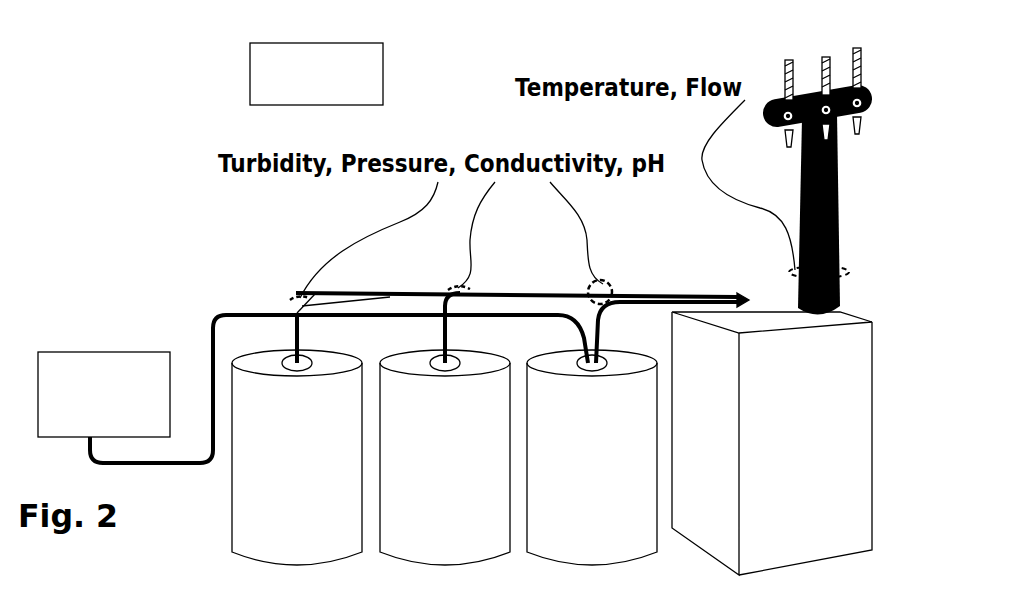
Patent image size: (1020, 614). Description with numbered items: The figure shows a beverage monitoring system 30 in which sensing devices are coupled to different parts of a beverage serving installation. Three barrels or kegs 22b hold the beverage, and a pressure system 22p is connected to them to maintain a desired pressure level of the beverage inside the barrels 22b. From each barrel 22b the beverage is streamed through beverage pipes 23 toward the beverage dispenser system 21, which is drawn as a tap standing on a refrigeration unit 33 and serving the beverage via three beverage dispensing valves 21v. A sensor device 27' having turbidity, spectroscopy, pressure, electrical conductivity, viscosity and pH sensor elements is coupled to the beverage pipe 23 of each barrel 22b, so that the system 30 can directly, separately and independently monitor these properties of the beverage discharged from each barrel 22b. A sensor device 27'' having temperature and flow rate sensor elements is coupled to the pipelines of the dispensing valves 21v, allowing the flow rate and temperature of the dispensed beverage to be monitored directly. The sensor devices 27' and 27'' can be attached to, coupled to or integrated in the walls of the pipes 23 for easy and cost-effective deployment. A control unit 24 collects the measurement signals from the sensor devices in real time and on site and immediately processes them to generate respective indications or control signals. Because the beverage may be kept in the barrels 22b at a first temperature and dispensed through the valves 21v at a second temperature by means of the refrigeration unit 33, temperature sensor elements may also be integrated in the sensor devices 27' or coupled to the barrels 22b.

The beverage monitoring system 30 is at (170, 103).
The control unit 24 is at (383, 75).
The beverage dispenser system 21 is at (774, 68).
The beverage dispensing valves 21v is at (860, 60).
The pressure system 22p is at (115, 288).
The fluid reservoir 22b is at (242, 463).
The pipelines 23 is at (558, 292).
The sensor device 27' is at (496, 266).
The sensor device 27'' is at (774, 262).
The refrigeration unit 33 is at (870, 380).